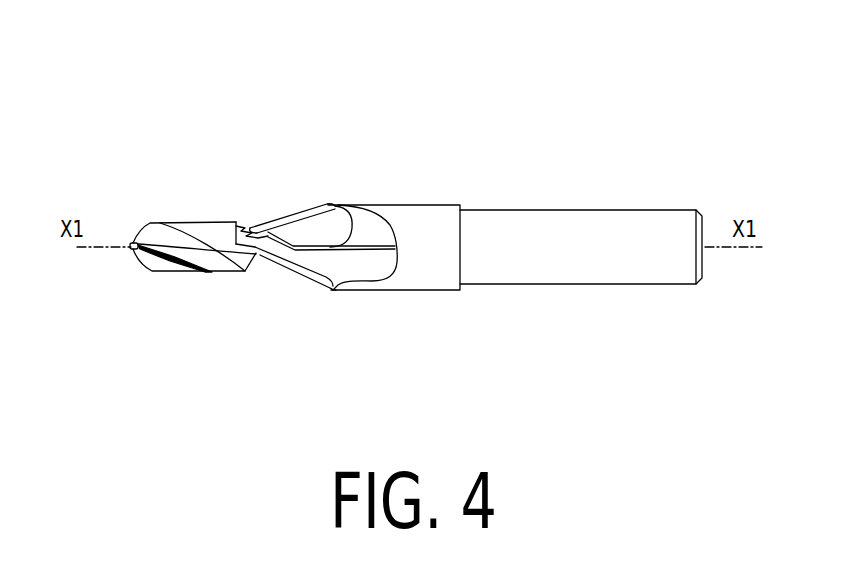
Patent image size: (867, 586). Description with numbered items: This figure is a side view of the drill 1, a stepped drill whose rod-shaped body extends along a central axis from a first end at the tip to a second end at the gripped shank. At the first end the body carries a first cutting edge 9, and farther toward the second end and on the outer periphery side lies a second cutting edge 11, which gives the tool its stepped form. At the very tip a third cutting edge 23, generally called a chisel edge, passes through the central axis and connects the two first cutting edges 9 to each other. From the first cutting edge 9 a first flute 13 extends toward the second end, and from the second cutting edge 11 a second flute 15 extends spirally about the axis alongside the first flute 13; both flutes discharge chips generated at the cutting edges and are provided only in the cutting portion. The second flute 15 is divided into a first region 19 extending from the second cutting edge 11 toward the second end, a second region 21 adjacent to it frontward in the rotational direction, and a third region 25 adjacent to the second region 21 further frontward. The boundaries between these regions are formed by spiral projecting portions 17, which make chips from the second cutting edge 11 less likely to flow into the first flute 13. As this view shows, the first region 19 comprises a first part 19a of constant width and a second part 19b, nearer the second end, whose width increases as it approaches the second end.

The drill 1 is at (555, 163).
The first cutting edge 9 is at (131, 243).
The second cutting edge 11 is at (272, 255).
The first flute 13 is at (172, 233).
The second flute 15 is at (320, 212).
The projecting portion 17 is at (297, 245).
The first region 19 is at (309, 200).
The first part 19a is at (250, 229).
The second part 19b is at (358, 267).
The second region 21 is at (313, 248).
The third cutting edge 23 is at (131, 246).
The third region 25 is at (283, 230).